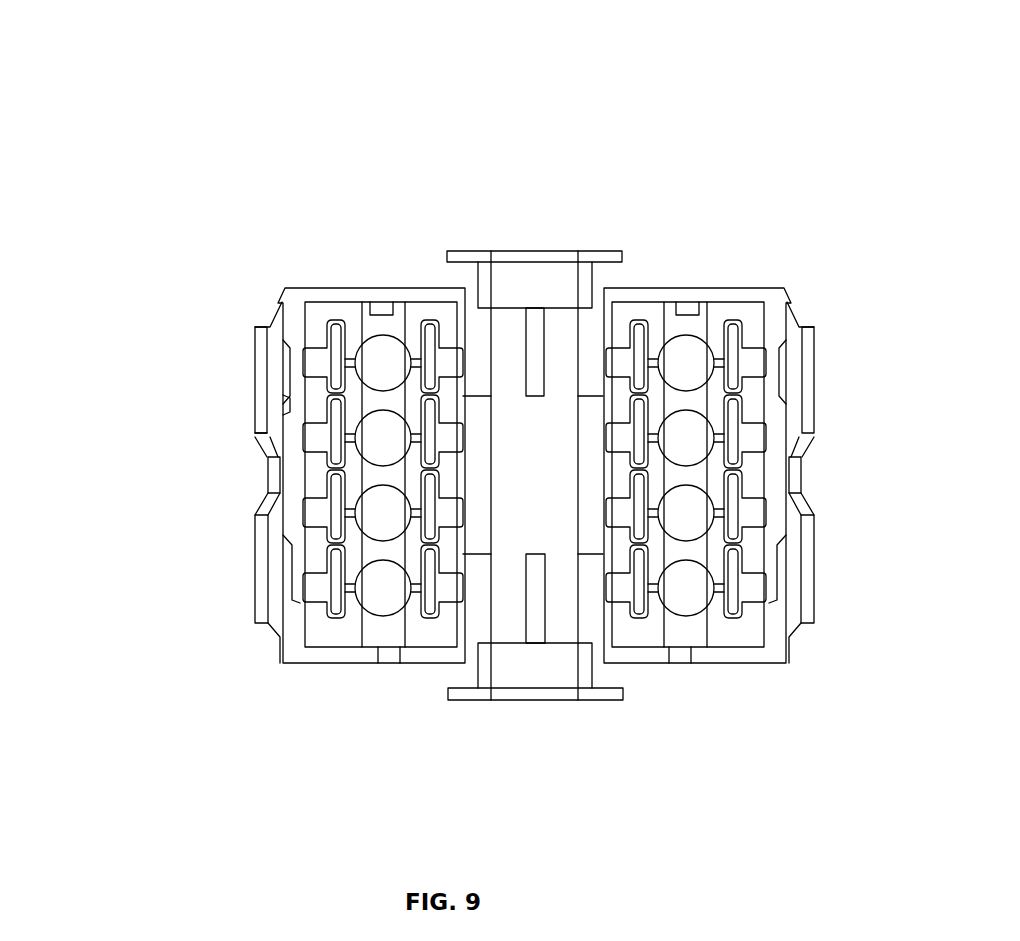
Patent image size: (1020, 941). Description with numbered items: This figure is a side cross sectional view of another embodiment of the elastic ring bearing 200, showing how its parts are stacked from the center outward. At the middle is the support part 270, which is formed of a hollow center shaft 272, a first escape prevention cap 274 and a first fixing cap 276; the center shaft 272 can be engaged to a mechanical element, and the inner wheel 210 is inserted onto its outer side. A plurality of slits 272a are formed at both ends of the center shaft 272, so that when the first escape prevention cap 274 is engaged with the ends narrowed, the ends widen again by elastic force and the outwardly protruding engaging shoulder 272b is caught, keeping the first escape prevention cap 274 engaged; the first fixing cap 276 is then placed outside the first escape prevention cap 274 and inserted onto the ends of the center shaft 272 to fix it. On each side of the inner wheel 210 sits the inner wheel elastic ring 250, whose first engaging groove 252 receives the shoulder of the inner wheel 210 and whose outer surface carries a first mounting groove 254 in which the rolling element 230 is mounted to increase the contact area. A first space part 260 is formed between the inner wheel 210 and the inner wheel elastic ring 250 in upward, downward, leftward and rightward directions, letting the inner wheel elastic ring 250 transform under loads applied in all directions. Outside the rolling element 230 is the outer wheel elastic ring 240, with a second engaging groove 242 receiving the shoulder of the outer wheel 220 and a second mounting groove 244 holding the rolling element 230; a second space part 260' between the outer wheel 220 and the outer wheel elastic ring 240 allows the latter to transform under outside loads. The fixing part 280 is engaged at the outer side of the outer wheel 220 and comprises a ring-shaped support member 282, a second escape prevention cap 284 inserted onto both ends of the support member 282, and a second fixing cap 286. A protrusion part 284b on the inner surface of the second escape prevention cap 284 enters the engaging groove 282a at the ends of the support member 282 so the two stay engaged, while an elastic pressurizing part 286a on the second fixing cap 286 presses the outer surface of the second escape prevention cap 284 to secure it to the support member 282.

The elastic ring bearing 200 is at (815, 113).
The inner wheel 210 is at (617, 588).
The outer wheel 220 is at (762, 588).
The rolling element 230 is at (693, 603).
The outer wheel elastic ring 240 is at (337, 348).
The second engaging groove 242 is at (330, 330).
The second mounting groove 244 is at (380, 340).
The inner wheel elastic ring 250 is at (420, 570).
The first engaging groove 252 is at (428, 552).
The first mounting groove 254 is at (413, 532).
The first space part 260 is at (651, 564).
The second space part 260' is at (755, 562).
The support part 270 is at (728, 183).
The center shaft 272 is at (590, 343).
The slits 272a is at (533, 342).
The engaging shoulder 272b is at (460, 285).
The first escape prevention cap 274 is at (440, 290).
The first fixing cap 276 is at (587, 251).
The fixing part 280 is at (157, 483).
The support member 282 is at (297, 477).
The engaging groove 282a is at (293, 550).
The second escape prevention cap 284 is at (298, 293).
The protrusion part 284b is at (288, 403).
The second fixing cap 286 is at (263, 372).
The pressurizing part 286a is at (272, 318).